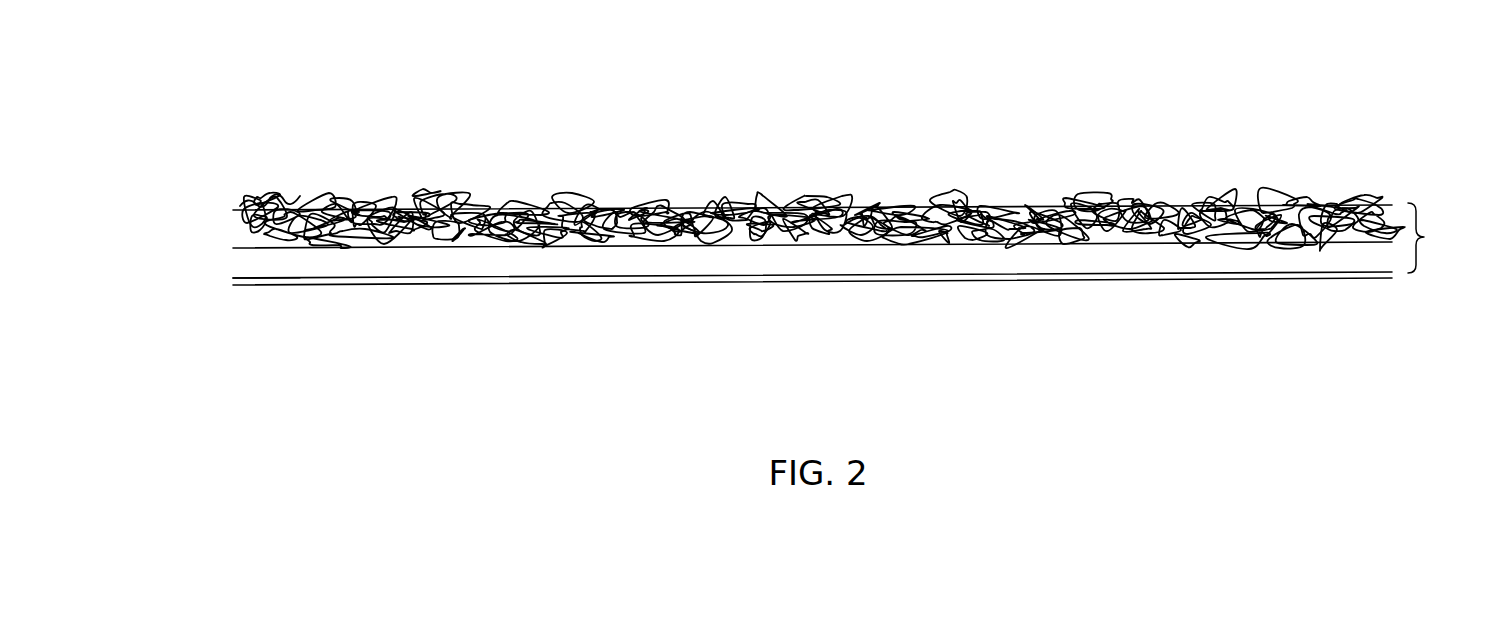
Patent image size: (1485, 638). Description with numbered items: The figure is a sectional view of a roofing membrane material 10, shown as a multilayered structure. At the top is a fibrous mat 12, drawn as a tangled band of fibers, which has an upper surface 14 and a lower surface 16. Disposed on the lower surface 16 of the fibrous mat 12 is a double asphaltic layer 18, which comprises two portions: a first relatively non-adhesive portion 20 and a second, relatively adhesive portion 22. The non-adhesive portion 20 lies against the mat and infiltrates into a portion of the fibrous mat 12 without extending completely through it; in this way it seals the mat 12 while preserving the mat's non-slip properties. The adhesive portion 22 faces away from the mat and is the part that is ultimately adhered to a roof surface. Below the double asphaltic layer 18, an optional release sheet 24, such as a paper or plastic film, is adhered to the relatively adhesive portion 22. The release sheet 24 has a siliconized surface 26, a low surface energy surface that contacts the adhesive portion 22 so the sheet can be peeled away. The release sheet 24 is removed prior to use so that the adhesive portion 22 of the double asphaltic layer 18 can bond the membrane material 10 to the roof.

The roofing membrane material 10 is at (1078, 80).
The fibrous mat 12 is at (1354, 190).
The upper surface 14 is at (238, 209).
The lower surface 16 is at (980, 247).
The double asphaltic layer 18 is at (1435, 238).
The first relatively non-adhesive portion 20 is at (228, 233).
The second relatively adhesive portion 22 is at (1325, 262).
The release sheet 24 is at (795, 287).
The siliconized surface 26 is at (234, 277).